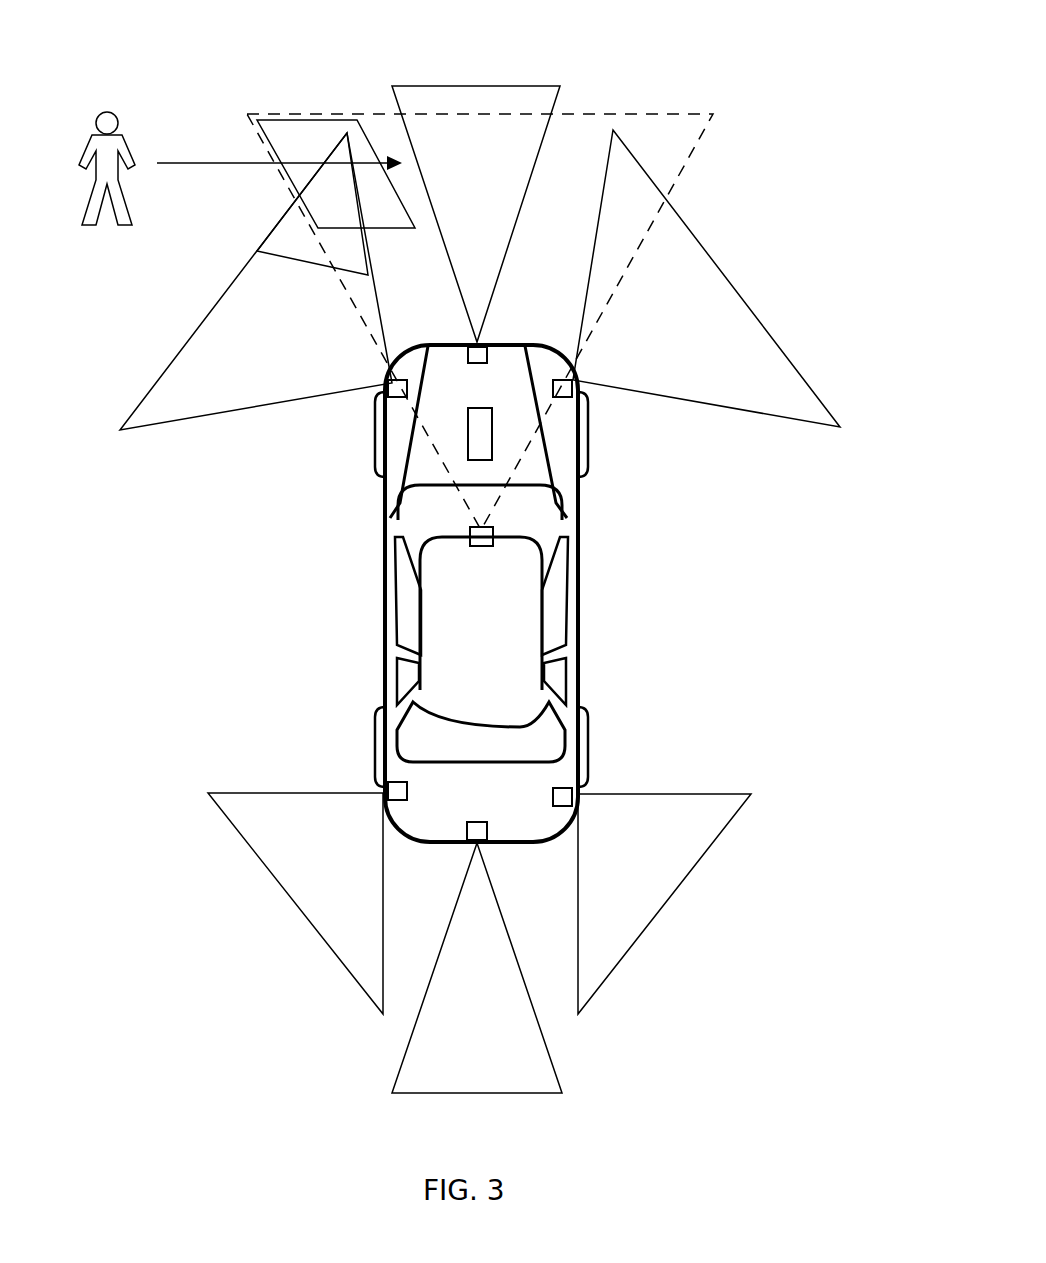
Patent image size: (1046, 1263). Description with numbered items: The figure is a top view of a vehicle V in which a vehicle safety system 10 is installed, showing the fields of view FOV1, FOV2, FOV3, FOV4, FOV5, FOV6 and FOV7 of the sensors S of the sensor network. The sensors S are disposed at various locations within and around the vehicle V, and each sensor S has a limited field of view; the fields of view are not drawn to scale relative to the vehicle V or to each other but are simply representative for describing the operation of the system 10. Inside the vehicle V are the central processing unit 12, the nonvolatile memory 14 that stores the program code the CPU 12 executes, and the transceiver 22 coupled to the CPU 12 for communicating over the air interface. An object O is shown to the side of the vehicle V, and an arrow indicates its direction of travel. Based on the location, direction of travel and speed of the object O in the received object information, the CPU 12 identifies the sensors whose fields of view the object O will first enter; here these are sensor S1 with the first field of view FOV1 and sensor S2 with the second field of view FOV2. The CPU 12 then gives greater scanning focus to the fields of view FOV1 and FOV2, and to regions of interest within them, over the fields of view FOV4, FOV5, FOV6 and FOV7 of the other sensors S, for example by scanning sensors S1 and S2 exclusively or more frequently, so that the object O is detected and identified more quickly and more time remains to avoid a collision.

The vehicle safety system 10 is at (226, 552).
The vehicle V is at (580, 613).
The object O is at (120, 112).
The sensors S is at (483, 337).
The sensor S1 is at (482, 547).
The sensor S2 is at (385, 402).
The central processing unit 12 is at (612, 445).
The nonvolatile memory 14 is at (612, 445).
The transceiver 22 is at (498, 447).
The first field of view FOV1 is at (588, 115).
The second field of view FOV2 is at (175, 358).
The field of view FOV3 is at (515, 90).
The field of view FOV4 is at (705, 240).
The field of view FOV5 is at (238, 791).
The field of view FOV6 is at (655, 803).
The field of view FOV7 is at (544, 1077).